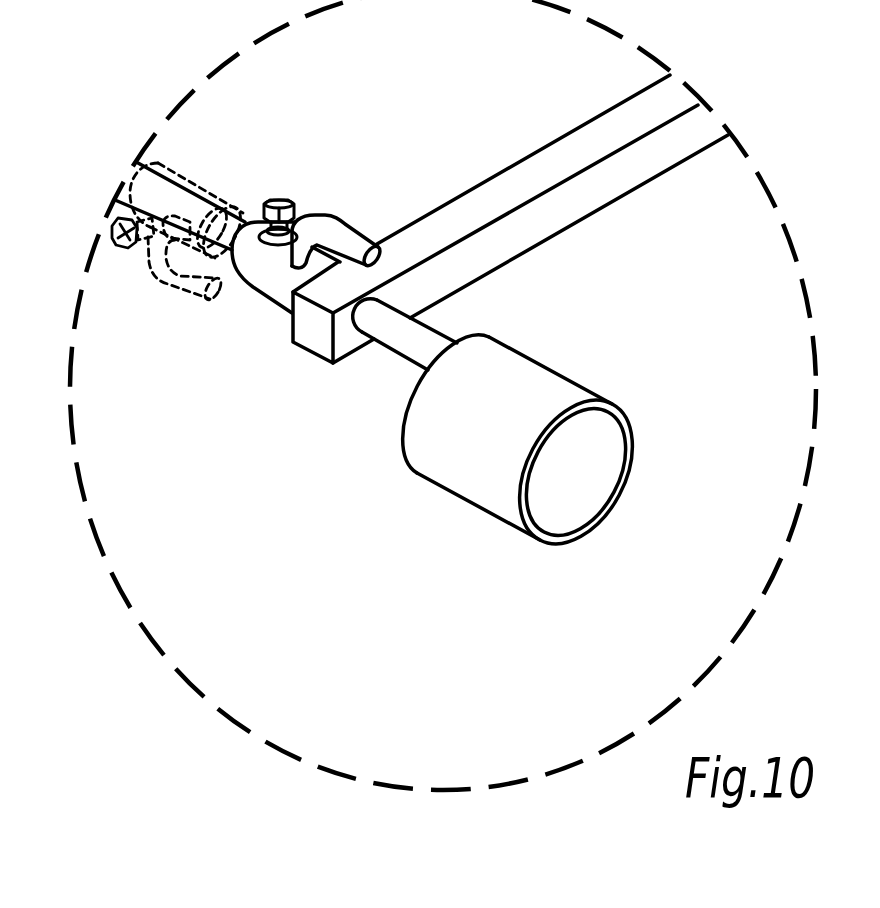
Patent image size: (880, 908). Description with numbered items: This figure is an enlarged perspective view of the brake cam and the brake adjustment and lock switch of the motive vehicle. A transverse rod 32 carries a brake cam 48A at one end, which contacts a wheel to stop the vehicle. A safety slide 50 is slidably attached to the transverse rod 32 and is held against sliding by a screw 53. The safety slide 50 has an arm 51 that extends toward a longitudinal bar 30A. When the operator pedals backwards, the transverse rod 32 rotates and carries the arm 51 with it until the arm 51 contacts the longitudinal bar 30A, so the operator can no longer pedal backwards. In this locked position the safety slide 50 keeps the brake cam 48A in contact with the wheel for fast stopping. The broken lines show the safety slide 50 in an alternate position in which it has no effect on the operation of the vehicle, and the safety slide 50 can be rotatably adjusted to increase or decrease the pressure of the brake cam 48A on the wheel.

The longitudinal bar 30A is at (562, 155).
The transverse rod 32 is at (400, 358).
The brake cam 48A is at (562, 376).
The safety slide 50 is at (341, 257).
The arm 51 is at (343, 227).
The screw 53 is at (278, 200).